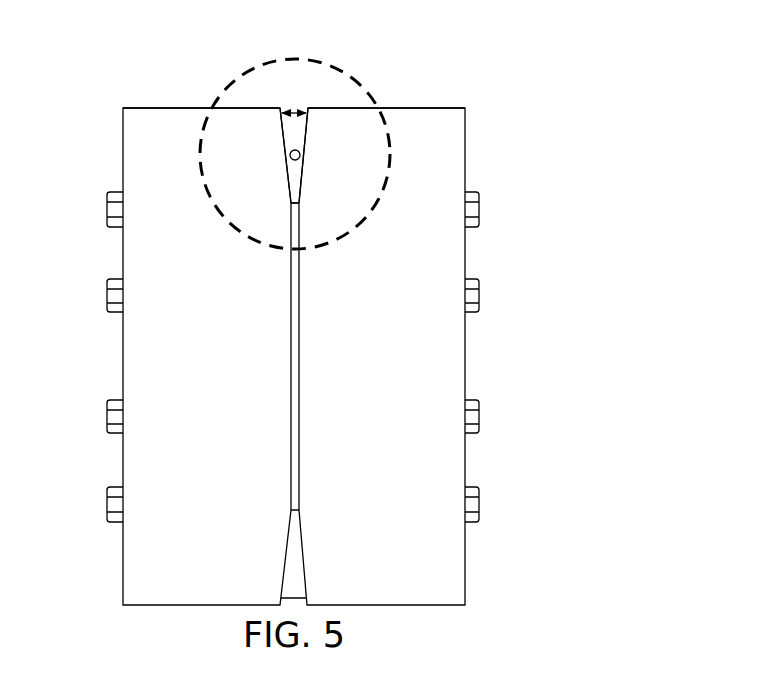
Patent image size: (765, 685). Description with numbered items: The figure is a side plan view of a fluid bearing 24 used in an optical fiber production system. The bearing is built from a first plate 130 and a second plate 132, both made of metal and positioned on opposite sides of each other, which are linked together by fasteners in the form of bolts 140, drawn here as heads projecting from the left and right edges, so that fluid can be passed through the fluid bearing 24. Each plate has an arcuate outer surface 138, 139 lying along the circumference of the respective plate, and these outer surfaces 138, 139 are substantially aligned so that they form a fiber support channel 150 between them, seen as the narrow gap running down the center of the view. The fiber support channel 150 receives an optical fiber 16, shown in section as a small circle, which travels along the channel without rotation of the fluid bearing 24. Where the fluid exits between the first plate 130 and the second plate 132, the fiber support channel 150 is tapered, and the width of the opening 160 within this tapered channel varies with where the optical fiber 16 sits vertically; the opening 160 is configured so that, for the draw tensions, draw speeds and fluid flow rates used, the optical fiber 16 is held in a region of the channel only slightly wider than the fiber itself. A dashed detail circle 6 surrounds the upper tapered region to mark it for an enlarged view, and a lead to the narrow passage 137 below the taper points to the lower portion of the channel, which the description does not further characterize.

The fluid bearing 24 is at (304, 335).
The first plate 130 is at (121, 167).
The second plate 132 is at (467, 168).
The arcuate outer surface 138 is at (175, 107).
The arcuate outer surface 139 is at (447, 107).
The bolts 140 is at (480, 215).
The detail circle (FIG. 6) 6 is at (363, 80).
The optical fiber 16 is at (300, 155).
The slot 137 is at (298, 197).
The fiber support channel 150 is at (302, 106).
The opening 160 is at (291, 108).